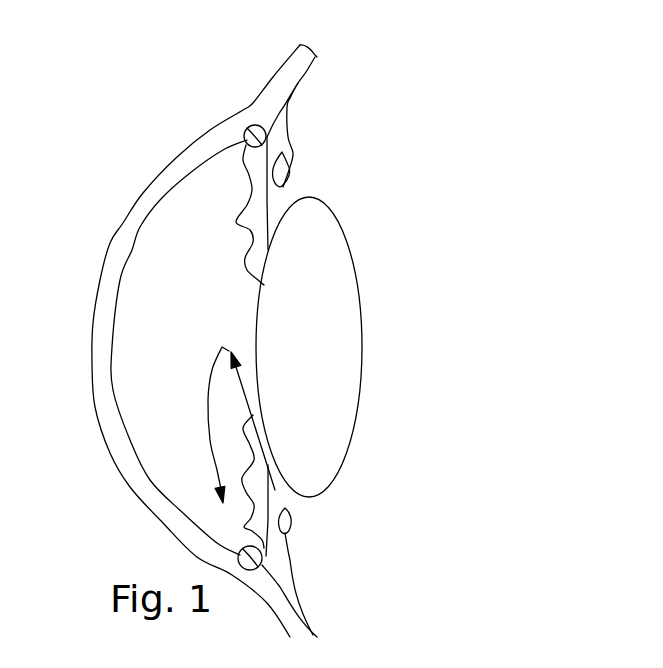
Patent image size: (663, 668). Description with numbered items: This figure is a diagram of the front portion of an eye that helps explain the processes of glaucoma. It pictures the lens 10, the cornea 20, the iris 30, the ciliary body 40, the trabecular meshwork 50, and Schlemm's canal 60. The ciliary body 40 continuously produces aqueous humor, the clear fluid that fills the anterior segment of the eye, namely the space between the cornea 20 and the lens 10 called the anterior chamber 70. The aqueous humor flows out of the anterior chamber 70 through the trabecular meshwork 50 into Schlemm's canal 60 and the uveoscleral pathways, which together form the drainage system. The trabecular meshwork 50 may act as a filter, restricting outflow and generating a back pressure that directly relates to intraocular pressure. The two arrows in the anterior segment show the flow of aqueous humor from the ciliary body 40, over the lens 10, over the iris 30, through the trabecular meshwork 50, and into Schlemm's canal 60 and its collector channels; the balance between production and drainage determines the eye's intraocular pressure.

The lens 10 is at (351, 433).
The cornea 20 is at (116, 241).
The iris 30 is at (237, 224).
The ciliary body 40 is at (291, 174).
The trabecular meshwork 50 is at (242, 147).
The Schlemm's canal 60 is at (252, 127).
The anterior chamber 70 is at (202, 323).